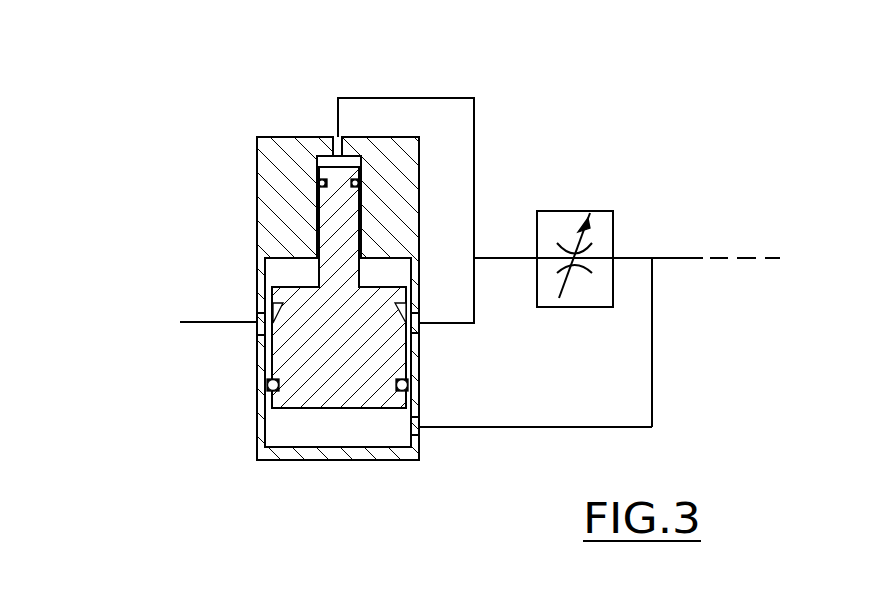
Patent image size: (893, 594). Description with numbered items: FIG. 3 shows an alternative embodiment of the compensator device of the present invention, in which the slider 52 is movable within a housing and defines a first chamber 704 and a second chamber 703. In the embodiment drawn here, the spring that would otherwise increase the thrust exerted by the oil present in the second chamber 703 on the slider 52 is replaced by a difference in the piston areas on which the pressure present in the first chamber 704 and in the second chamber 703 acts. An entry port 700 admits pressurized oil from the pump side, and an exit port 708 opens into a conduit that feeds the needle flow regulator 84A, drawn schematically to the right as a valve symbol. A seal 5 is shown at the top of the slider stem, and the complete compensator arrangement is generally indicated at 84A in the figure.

The actuator assembly 84A is at (210, 228).
The first chamber 704 is at (313, 150).
The seal 5 is at (330, 170).
The piston 52 is at (328, 407).
The inlet port 700 is at (257, 316).
The exit port 708 is at (418, 327).
The second chamber 703 is at (337, 432).